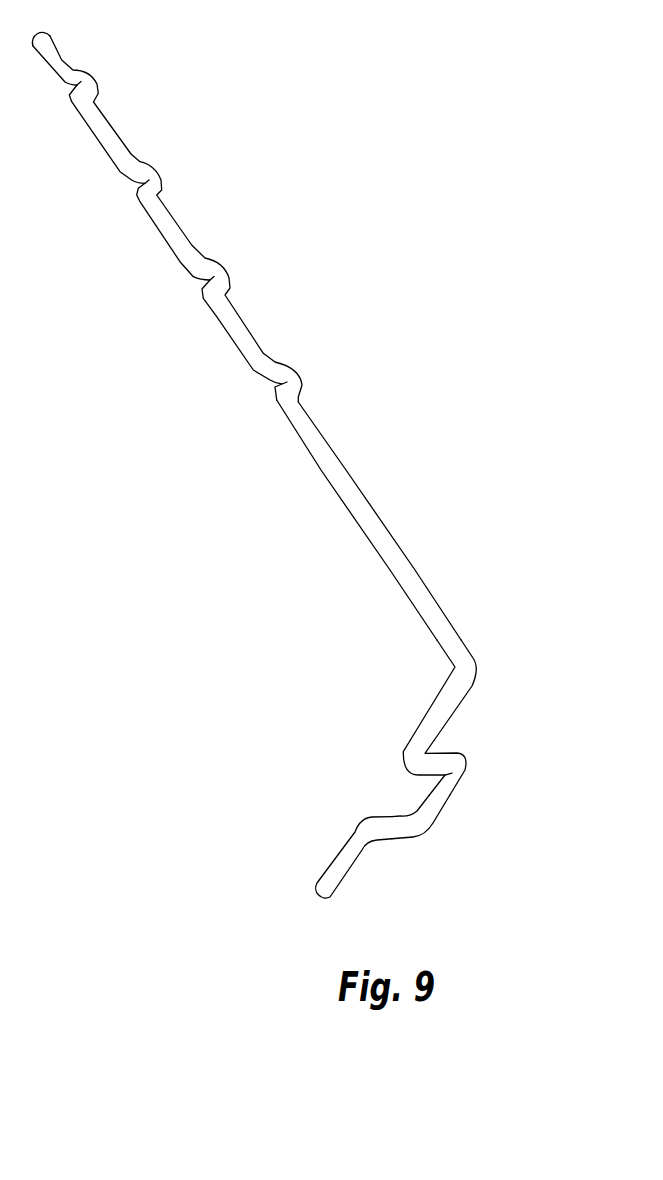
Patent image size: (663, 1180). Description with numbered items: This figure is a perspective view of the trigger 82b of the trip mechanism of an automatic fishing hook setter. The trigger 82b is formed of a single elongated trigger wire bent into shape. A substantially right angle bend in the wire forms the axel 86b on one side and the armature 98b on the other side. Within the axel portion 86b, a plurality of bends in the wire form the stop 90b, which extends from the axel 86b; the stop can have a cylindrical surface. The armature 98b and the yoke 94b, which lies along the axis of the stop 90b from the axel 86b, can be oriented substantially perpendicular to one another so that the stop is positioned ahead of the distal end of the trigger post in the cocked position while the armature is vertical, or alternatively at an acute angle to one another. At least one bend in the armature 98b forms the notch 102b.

The trigger 82b is at (293, 465).
The axel 86b is at (420, 717).
The stop 90b is at (443, 802).
The yoke 94b is at (457, 749).
The armature 98b is at (333, 445).
The notch 102b is at (190, 283).